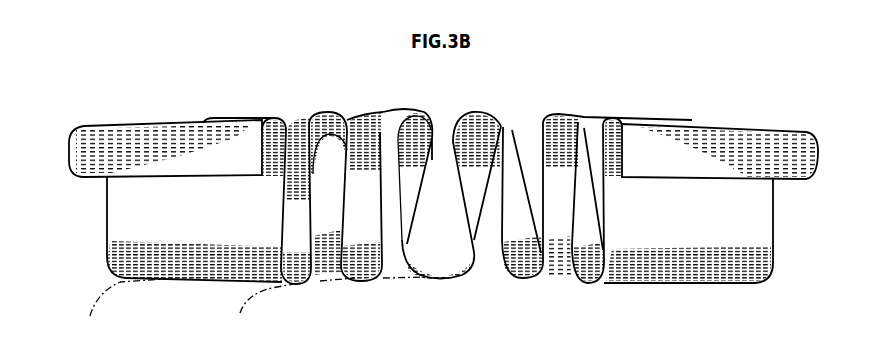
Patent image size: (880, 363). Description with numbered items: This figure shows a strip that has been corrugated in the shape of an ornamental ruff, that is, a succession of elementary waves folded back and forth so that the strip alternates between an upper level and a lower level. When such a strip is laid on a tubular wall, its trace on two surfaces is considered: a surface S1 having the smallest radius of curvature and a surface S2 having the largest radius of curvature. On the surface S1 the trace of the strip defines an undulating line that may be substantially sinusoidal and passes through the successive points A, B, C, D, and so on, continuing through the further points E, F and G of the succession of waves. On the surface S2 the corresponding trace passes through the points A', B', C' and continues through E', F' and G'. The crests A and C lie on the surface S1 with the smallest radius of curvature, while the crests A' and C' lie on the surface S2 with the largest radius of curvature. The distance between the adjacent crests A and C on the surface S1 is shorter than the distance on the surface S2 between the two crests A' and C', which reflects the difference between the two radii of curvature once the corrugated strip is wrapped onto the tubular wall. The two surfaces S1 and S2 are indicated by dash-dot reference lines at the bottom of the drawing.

The crest A' is at (165, 124).
The crest A is at (261, 193).
The crest C' is at (235, 94).
The crest C is at (328, 162).
The point of the undulating line B' is at (194, 251).
The point of the undulating line B is at (311, 229).
The point of the undulating line D is at (364, 284).
The top fold segment E' is at (365, 114).
The top fold E is at (407, 149).
The central bottom fold F is at (438, 287).
The fold edge of central bottom fold F' is at (486, 224).
The top fold G is at (477, 154).
The top fold G' is at (597, 171).
The surface with smallest radius of curvature S1 is at (329, 310).
The surface with largest radius of curvature S2 is at (125, 311).